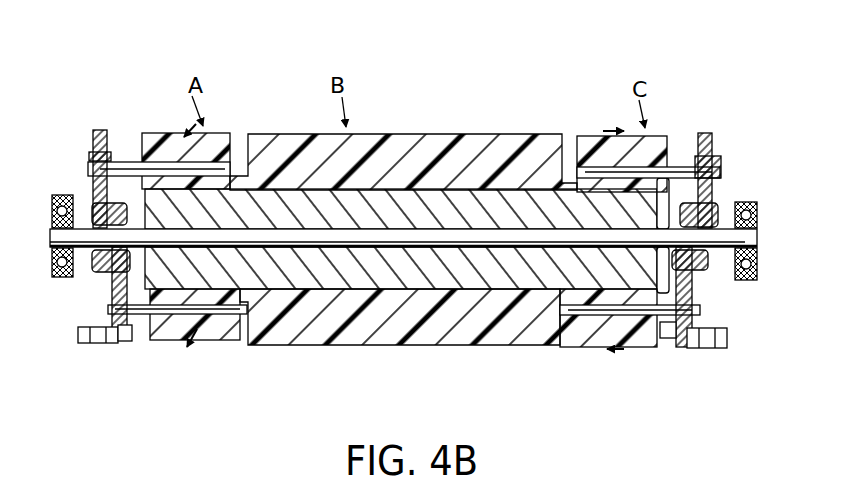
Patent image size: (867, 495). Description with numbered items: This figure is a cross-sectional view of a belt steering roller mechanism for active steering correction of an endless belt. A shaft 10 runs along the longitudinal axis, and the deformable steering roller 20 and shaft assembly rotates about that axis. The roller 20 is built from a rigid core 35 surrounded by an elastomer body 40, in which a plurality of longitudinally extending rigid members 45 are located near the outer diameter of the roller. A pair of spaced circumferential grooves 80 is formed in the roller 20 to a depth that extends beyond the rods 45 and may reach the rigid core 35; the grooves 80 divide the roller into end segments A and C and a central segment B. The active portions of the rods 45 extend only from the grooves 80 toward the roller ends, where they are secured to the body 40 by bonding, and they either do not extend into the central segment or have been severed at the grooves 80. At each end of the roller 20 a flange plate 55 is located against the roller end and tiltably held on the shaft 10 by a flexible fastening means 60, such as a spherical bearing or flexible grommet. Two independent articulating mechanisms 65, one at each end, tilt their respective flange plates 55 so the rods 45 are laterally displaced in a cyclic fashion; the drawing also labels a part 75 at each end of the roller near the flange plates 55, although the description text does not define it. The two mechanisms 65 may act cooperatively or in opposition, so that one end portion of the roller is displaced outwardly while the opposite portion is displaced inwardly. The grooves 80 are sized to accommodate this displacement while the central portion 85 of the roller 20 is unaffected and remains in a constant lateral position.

The shaft 10 is at (757, 244).
The steering roller 20 is at (371, 112).
The rigid core 35 is at (660, 283).
The elastomer body 40 is at (510, 332).
The longitudinally extending rigid members 45 is at (665, 135).
The flange plate 55 is at (128, 340).
The fastening means 60 is at (712, 207).
The articulating mechanism 65 is at (85, 345).
The tie bolt 75 is at (107, 157).
The circumferential grooves 80 is at (238, 147).
The central portion 85 is at (428, 148).